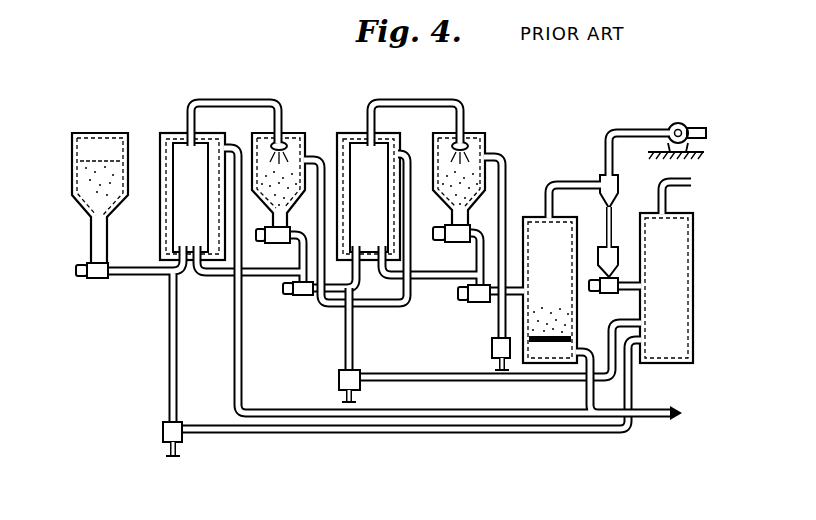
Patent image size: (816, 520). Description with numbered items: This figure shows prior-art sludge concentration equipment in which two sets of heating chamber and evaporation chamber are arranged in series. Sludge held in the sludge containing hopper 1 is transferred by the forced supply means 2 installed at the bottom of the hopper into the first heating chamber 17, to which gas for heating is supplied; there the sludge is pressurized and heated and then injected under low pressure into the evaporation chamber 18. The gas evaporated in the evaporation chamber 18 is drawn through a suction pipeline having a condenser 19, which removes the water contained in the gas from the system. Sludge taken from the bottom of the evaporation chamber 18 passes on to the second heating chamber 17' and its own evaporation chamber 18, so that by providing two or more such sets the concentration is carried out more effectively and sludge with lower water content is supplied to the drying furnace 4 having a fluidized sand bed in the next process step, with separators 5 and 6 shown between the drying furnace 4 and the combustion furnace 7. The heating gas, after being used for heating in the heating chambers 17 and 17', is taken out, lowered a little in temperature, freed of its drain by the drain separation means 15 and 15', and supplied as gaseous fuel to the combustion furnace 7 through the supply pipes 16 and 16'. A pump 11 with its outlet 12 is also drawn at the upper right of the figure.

The sludge containing hopper 1 is at (105, 140).
The forced supply means 2 is at (91, 262).
The drying furnace 4 is at (537, 217).
The cyclone separator 5 is at (600, 180).
The cyclone separator 6 is at (600, 266).
The combustion furnace 7 is at (650, 214).
The pump 11 is at (672, 126).
The outlet 12 is at (702, 125).
The drain separation means 15 is at (154, 439).
The drain separation means 15' is at (328, 386).
The supply pipe 16 is at (411, 404).
The supply pipe 16' is at (500, 350).
The heating chamber 17 is at (192, 168).
The heating chamber 17' is at (368, 171).
The evaporation chamber 18 is at (286, 133).
The condenser 19 is at (492, 350).